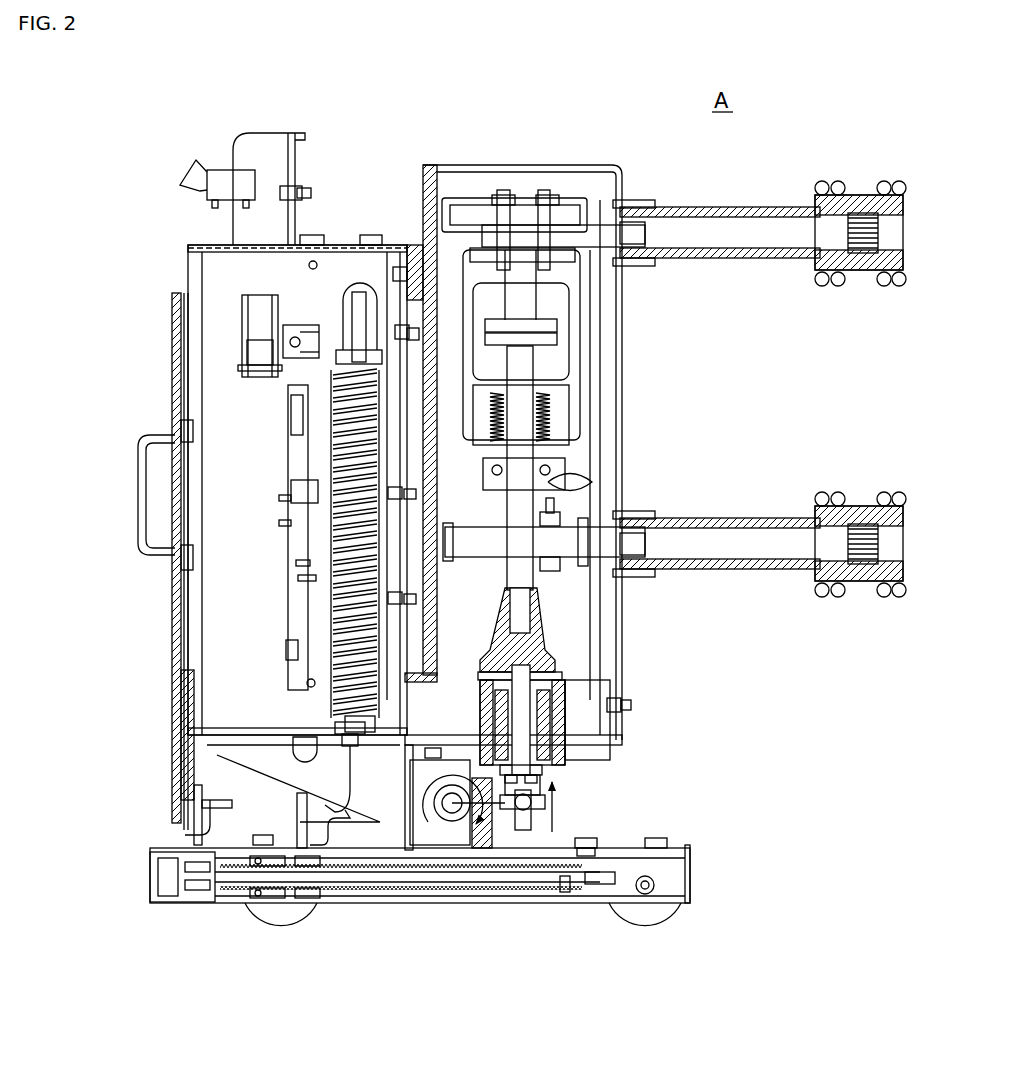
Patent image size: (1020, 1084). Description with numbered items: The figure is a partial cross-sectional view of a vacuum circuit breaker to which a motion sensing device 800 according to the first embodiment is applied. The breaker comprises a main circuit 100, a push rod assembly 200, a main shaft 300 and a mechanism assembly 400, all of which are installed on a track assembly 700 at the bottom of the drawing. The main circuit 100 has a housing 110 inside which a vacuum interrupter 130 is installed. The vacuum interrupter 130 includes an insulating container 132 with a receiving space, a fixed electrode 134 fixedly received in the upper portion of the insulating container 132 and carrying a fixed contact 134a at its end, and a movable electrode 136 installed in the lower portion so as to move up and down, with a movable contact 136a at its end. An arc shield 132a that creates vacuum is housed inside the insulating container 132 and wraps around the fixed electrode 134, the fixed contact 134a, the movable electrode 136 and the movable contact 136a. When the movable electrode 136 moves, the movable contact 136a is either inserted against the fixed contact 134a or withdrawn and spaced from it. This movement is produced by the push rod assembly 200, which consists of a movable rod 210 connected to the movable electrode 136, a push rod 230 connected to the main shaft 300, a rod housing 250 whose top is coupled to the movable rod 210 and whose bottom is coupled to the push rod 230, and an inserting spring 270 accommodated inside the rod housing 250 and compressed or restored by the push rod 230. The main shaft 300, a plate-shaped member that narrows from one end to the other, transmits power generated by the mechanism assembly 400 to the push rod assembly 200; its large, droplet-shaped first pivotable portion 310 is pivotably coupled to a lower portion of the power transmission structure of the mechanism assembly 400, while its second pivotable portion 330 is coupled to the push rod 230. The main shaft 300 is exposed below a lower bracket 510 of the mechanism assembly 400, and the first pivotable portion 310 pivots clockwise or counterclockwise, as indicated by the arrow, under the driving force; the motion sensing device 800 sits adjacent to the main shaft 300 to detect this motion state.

The main circuit 100 is at (455, 158).
The housing 110 is at (625, 600).
The vacuum interrupter 130 is at (763, 285).
The insulating container 132 is at (575, 415).
The arc shield 132a is at (565, 392).
The fixed electrode 134 is at (520, 291).
The fixed contact 134a is at (540, 326).
The movable electrode 136 is at (525, 365).
The movable contact 136a is at (535, 341).
The push rod assembly 200 is at (707, 627).
The movable rod 210 is at (517, 540).
The push rod 230 is at (560, 690).
The rod housing 250 is at (520, 705).
The inserting spring 270 is at (560, 750).
The main shaft 300 is at (534, 981).
The first pivotable portion 310 is at (480, 820).
The second pivotable portion 330 is at (528, 820).
The mechanism assembly 400 is at (333, 447).
The lower bracket 510 is at (352, 733).
The track assembly 700 is at (697, 876).
The motion sensing device 800 is at (462, 803).